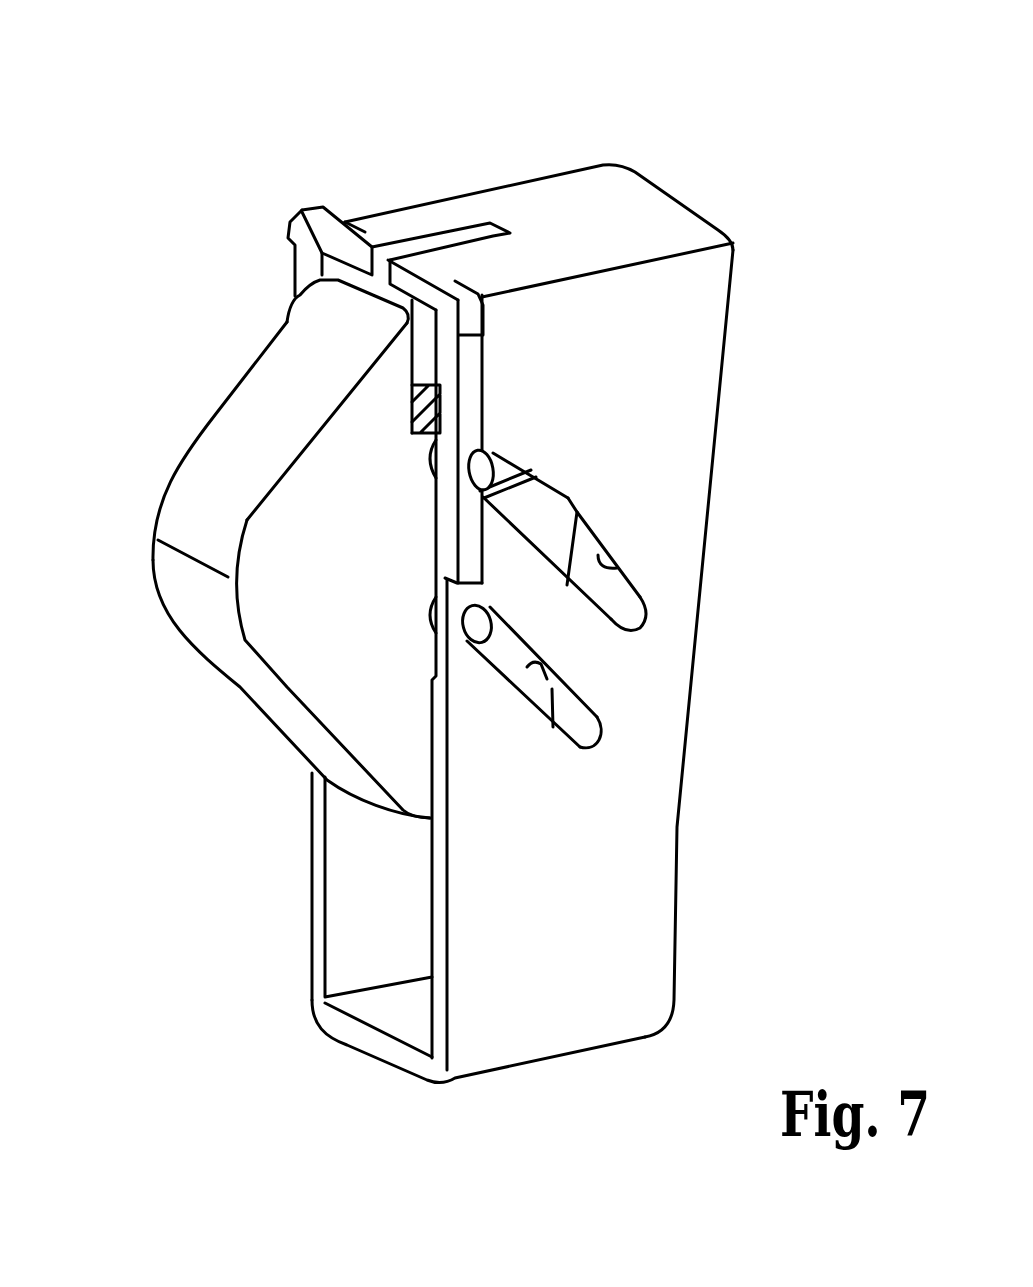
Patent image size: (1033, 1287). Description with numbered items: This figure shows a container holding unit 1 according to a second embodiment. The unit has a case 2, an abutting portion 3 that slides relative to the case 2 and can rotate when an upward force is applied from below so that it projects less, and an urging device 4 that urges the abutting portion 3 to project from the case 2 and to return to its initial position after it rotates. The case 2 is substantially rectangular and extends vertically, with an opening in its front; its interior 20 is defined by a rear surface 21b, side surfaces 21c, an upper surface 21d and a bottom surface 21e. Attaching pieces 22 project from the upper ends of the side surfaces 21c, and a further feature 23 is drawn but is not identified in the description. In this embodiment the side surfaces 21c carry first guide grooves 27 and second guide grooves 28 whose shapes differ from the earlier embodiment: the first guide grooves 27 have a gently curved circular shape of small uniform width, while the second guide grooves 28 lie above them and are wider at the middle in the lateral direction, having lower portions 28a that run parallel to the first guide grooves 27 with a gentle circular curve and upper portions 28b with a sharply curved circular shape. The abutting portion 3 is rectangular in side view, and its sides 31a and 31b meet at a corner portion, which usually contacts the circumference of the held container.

The container holding unit 1 is at (93, 157).
The case 2 is at (288, 265).
The abutting portion 3 is at (247, 372).
The urging device 4 is at (515, 489).
The interior 20 is at (350, 932).
The rear surface 21b is at (680, 830).
The side surfaces 21c is at (700, 363).
The upper surface 21d is at (564, 182).
The bottom surface 21e is at (525, 1062).
The attaching pieces 22 is at (298, 212).
The slot 23 is at (460, 232).
The first guide grooves 27 is at (545, 677).
The second guide grooves 28 is at (845, 493).
The lower portions 28a is at (642, 599).
The upper portions 28b is at (617, 568).
The side of corner portion 31a is at (220, 437).
The side of corner portion 31b is at (243, 680).